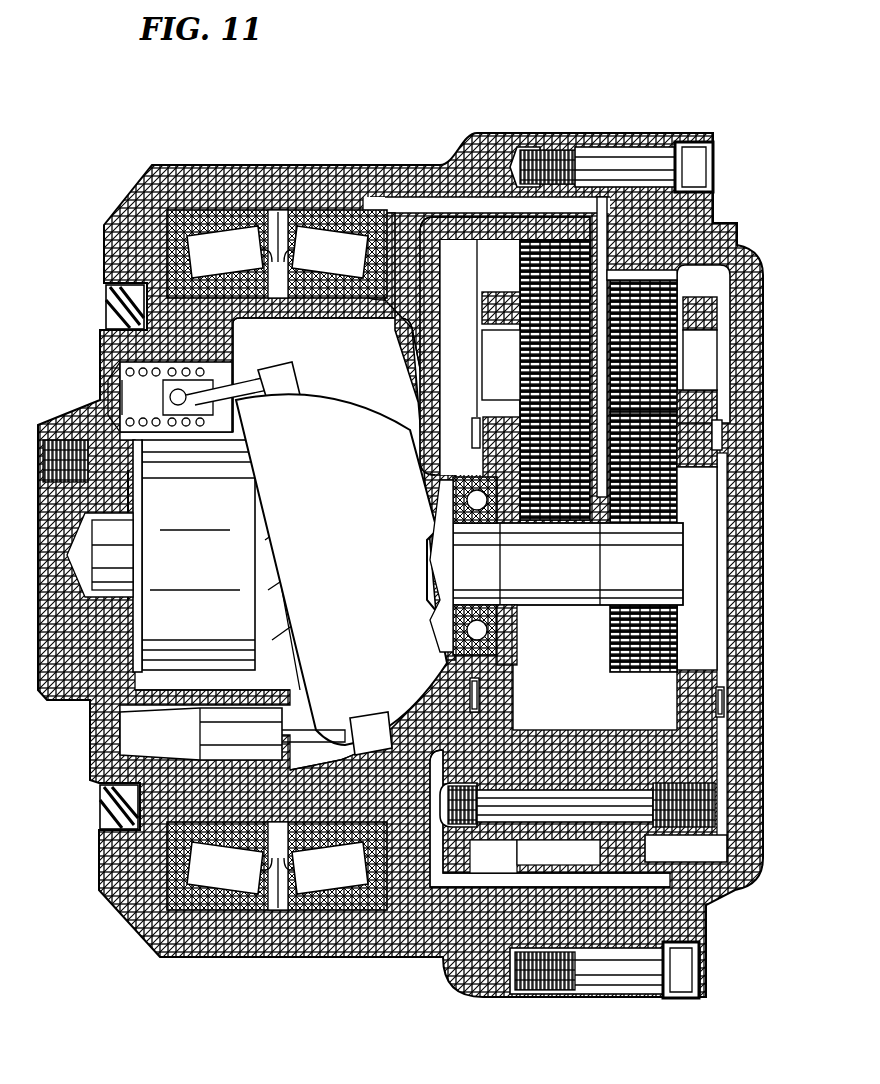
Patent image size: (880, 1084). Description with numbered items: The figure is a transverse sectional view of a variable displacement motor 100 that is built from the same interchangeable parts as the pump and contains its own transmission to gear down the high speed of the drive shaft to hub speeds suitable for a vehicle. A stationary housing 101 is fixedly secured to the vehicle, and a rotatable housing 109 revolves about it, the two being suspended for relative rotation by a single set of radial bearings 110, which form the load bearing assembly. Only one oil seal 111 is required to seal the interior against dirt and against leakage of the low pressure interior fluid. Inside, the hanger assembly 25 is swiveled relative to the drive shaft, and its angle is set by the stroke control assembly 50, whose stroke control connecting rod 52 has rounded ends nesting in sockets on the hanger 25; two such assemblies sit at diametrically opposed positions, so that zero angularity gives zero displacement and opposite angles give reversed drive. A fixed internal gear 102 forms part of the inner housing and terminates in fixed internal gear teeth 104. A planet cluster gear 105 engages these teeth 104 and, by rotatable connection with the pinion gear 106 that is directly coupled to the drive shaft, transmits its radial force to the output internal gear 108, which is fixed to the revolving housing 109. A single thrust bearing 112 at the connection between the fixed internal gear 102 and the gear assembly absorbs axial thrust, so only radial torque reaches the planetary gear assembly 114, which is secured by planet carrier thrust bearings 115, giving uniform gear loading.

The variable displacement motor 100 is at (428, 92).
The stationary housing 101 is at (100, 355).
The fixed internal gear 102 is at (420, 340).
The fixed internal gear teeth 104 is at (570, 272).
The planet cluster gear 105 is at (585, 388).
The pinion gear 106 is at (660, 578).
The output internal gear 108 is at (700, 272).
The rotatable housing 109 is at (530, 160).
The radial bearings 110 is at (262, 210).
The oil seal 111 is at (112, 305).
The thrust bearing 112 is at (460, 493).
The planetary gear assembly 114 is at (700, 798).
The planet carrier thrust bearings 115 is at (480, 698).
The hanger assembly 25 is at (370, 415).
The stroke control assembly 50 is at (205, 365).
The stroke control connecting rod 52 is at (333, 738).